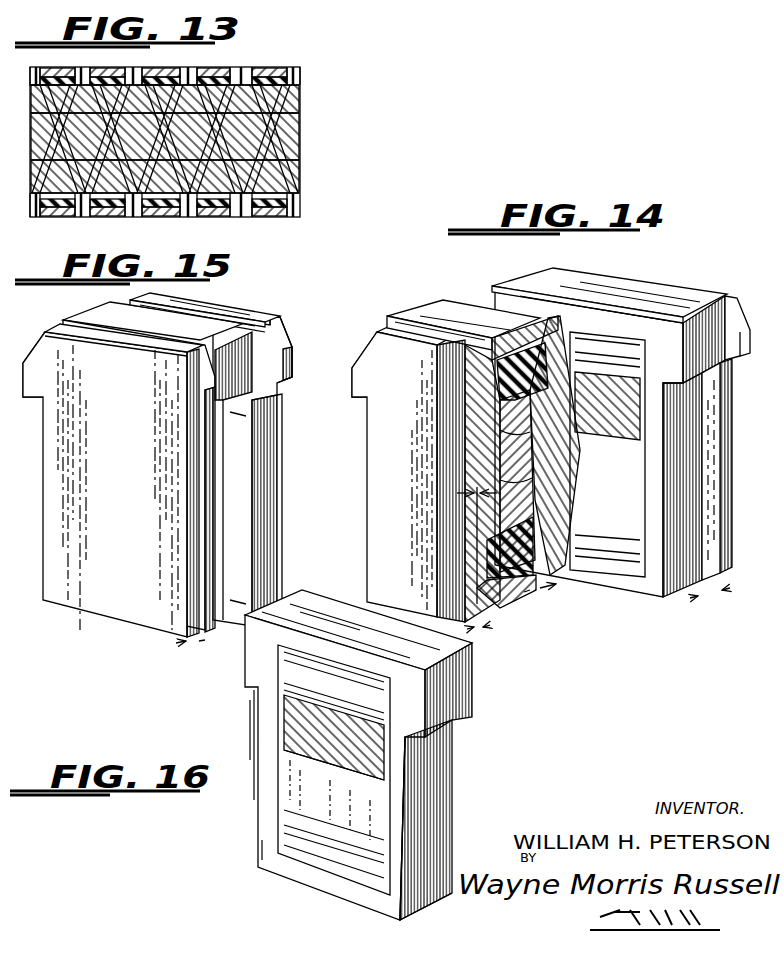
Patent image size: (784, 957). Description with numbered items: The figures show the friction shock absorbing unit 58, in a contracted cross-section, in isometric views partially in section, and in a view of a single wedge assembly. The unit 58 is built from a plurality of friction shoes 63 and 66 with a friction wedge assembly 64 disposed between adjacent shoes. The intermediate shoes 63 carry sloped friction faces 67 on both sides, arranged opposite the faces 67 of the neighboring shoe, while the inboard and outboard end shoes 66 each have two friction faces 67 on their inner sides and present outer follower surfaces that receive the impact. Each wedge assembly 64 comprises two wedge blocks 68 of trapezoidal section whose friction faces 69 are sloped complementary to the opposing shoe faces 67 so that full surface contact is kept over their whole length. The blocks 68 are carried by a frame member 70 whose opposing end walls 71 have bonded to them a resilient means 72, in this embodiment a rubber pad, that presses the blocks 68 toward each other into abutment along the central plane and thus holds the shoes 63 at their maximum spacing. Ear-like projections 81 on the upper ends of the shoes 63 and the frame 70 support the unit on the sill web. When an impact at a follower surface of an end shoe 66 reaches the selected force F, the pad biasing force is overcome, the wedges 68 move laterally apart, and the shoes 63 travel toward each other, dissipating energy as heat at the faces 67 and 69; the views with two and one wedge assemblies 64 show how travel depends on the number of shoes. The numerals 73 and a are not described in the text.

In FIG. 13, the shock absorbing unit 58 is at (303, 206).
In FIG. 15, the shock absorbing unit 58 is at (266, 310).
In FIG. 14, the shock absorbing unit 58 is at (507, 280).
In FIG. 13, the friction shoe 63 is at (32, 67).
In FIG. 15, the friction shoe 63 is at (197, 304).
In FIG. 14, the friction shoe 63 is at (598, 282).
In FIG. 13, the friction wedge assembly 64 is at (112, 68).
In FIG. 15, the friction wedge assembly 64 is at (106, 313).
In FIG. 14, the friction wedge assembly 64 is at (432, 314).
In FIG. 13, the inboard and outboard end friction shoe 66 is at (299, 145).
In FIG. 15, the inboard and outboard end friction shoe 66 is at (120, 595).
In FIG. 14, the inboard and outboard end friction shoe 66 is at (386, 463).
In FIG. 14, the friction face 67 is at (500, 440).
In FIG. 13, the wedge block 68 is at (281, 101).
In FIG. 14, the wedge block 68 is at (488, 418).
In FIG. 14, the friction face of wedge block 69 is at (500, 476).
In FIG. 15, the frame member 70 is at (238, 455).
In FIG. 14, the frame member 70 is at (675, 560).
In FIG. 16, the frame member 70 is at (420, 770).
In FIG. 14, the end wall 71 is at (556, 330).
In FIG. 16, the end wall 71 is at (332, 652).
In FIG. 13, the resilient means 72 is at (299, 78).
In FIG. 14, the resilient means 72 is at (492, 372).
In FIG. 16, the frame side 73 is at (440, 852).
In FIG. 15, the ear-like projection 81 is at (287, 364).
In FIG. 14, the ear-like projection 81 is at (352, 390).
In FIG. 14, the dimension a is at (492, 522).
In FIG. 14, the force F is at (392, 498).